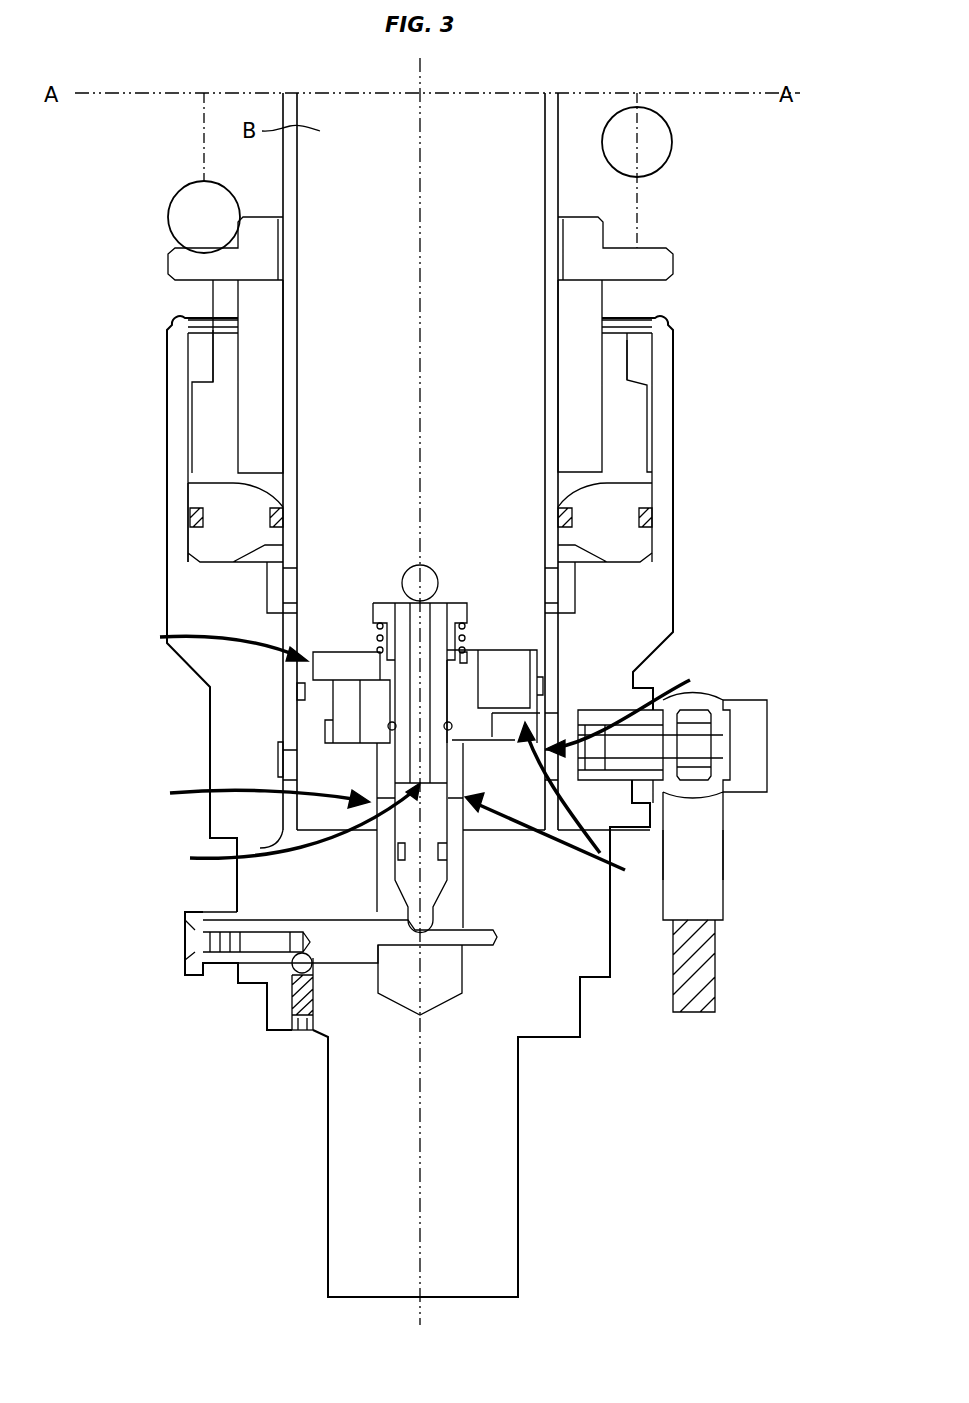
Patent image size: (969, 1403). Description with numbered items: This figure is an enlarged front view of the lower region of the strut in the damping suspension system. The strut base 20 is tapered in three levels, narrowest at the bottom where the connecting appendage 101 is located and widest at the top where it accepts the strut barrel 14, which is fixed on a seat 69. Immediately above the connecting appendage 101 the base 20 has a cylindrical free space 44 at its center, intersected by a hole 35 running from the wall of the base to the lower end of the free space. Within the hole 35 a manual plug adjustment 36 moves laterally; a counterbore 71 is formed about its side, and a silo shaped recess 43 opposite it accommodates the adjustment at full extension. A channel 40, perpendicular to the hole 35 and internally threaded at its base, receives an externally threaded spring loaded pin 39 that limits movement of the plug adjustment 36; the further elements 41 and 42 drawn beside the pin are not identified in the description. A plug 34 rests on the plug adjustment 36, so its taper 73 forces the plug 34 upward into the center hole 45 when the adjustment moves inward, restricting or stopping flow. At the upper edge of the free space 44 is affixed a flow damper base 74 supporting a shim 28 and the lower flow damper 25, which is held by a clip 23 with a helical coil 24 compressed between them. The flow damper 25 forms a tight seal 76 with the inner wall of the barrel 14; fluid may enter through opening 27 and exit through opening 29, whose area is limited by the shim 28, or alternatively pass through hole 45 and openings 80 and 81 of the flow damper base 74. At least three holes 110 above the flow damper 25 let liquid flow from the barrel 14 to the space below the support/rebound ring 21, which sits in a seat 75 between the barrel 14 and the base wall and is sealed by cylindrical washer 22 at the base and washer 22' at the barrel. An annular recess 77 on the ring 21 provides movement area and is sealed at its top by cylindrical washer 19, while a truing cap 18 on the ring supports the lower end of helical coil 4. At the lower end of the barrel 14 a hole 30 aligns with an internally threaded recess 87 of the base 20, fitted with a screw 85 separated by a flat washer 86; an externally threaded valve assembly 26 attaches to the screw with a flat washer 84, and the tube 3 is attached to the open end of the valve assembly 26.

The tube 3 is at (700, 978).
The helical coil 4 is at (660, 142).
The strut barrel 14 is at (553, 118).
The truing cap 18 is at (660, 262).
The cylindrical washer 19 is at (667, 325).
The strut base 20 is at (663, 434).
The support/rebound ring 21 is at (207, 392).
The cylindrical washer 22 is at (378, 520).
The washer 22' is at (378, 485).
The clip 23 is at (465, 605).
The helical coil 24 is at (470, 633).
The lower flow damper 25 is at (537, 670).
The valve assembly 26 is at (748, 744).
The opening 27 is at (213, 643).
The shim 28 is at (312, 762).
The opening 29 is at (586, 798).
The hole 30 is at (625, 705).
The plug 34 is at (377, 862).
The hole 35 is at (377, 890).
The manual plug adjustment 36 is at (185, 965).
The spring loaded pin 39 is at (302, 1032).
The channel 40 is at (292, 1022).
The spring 41 is at (292, 1000).
The ball 42 is at (300, 968).
The silo shaped recess 43 is at (500, 940).
The free space 44 is at (470, 988).
The center hole 45 is at (296, 858).
The seat 69 is at (210, 827).
The counterbore 71 is at (190, 940).
The taper 73 is at (395, 990).
The flow damper base 74 is at (470, 865).
The seat 75 is at (188, 572).
The tight seal 76 is at (305, 673).
The annular recess 77 is at (633, 366).
The opening 80 is at (260, 795).
The opening 81 is at (559, 853).
The flat washer 84 is at (680, 810).
The screw 85 is at (680, 850).
The flat washer 86 is at (680, 885).
The internally threaded recess 87 is at (715, 766).
The connecting appendage 101 is at (495, 1165).
The holes 110 is at (427, 585).